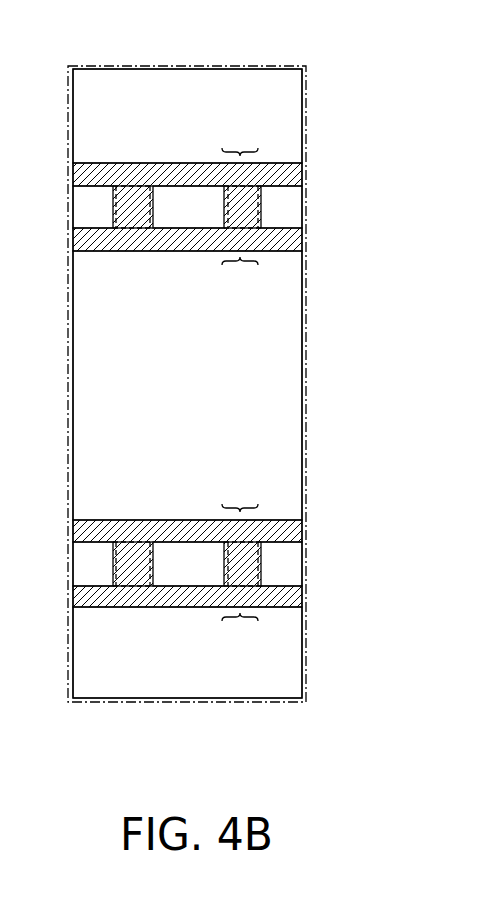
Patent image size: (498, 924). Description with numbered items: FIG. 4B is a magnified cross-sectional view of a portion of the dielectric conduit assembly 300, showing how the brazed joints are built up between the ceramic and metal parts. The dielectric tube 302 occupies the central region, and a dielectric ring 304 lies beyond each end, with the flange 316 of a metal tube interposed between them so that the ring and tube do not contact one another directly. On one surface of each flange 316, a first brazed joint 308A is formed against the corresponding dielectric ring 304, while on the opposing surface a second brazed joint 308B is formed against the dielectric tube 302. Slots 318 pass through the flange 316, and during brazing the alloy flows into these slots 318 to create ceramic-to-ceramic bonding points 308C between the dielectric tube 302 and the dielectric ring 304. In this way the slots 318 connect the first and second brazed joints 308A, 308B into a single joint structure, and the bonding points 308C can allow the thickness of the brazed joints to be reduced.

The dielectric conduit assembly 300 is at (267, 706).
The dielectric tube 302 is at (203, 399).
The dielectric ring 304 is at (203, 134).
The first brazed joint 308A is at (293, 177).
The second brazed joint 308B is at (293, 243).
The ceramic-to-ceramic bonding point 308C is at (241, 385).
The flange 316 is at (205, 220).
The slot 318 is at (263, 220).